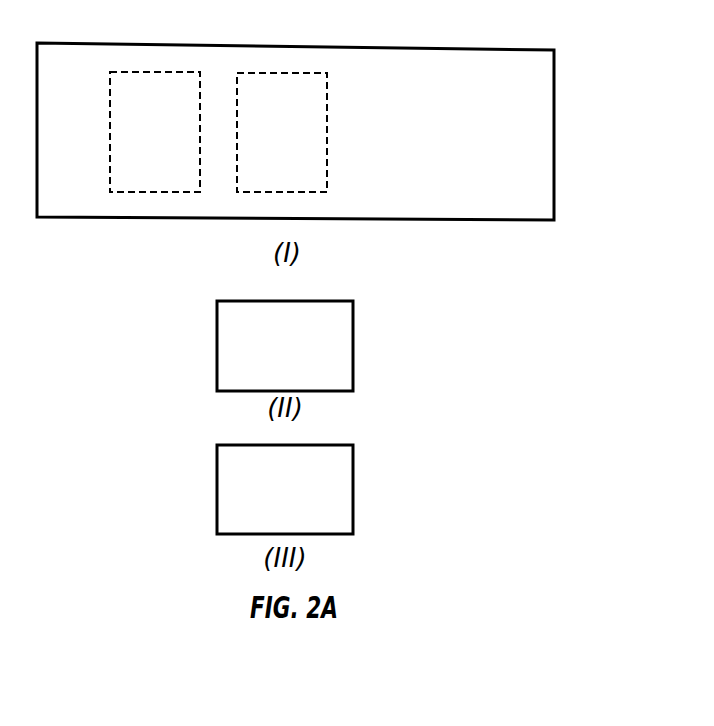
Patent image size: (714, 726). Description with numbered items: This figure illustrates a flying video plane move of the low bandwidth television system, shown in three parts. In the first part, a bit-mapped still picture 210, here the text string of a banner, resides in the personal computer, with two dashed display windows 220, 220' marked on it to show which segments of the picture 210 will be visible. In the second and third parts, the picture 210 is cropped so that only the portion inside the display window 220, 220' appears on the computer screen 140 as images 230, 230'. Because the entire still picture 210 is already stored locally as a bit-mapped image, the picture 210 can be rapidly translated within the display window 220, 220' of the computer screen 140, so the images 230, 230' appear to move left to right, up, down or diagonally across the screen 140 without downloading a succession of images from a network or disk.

The still picture 210 is at (333, 131).
The display window 220 is at (175, 96).
The display window 220' is at (310, 96).
The computer screen 140 is at (285, 416).
The image 230 is at (232, 328).
The image 230' is at (237, 474).